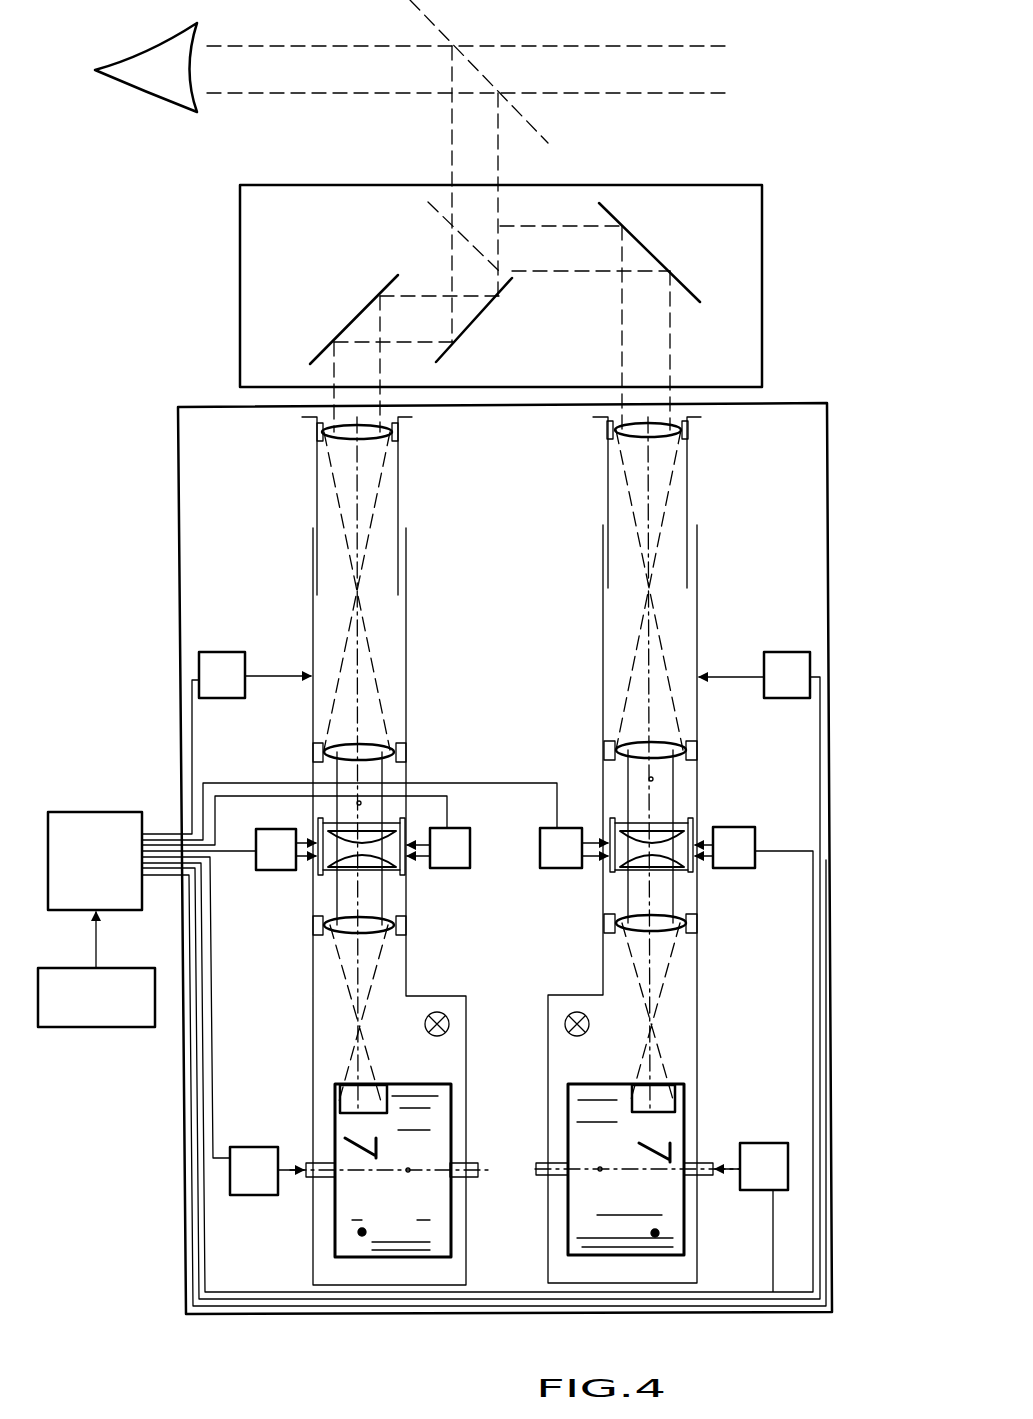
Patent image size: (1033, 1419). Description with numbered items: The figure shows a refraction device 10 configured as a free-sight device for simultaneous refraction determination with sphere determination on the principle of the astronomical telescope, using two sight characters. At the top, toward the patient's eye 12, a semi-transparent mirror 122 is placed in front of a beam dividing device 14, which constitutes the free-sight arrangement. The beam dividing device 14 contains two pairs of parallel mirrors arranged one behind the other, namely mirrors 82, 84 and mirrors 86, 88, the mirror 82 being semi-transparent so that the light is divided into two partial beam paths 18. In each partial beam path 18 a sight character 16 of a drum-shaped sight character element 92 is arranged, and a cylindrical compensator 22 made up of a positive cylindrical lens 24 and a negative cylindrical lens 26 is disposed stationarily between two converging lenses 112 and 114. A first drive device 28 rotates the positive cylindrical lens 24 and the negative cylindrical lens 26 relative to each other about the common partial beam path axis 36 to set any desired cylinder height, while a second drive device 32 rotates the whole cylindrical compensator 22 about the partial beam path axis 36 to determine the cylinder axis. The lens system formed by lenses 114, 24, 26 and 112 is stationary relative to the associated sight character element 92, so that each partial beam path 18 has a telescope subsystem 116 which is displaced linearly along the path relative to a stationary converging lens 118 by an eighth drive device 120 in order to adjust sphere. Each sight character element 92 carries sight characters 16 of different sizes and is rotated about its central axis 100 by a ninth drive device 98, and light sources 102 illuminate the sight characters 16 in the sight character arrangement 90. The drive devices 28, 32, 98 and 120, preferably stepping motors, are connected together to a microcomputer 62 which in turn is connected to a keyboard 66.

The refraction device 10 is at (210, 362).
The eye 12 is at (143, 92).
The beam dividing device 14 is at (240, 242).
The sight character 16 is at (349, 1160).
The partial beam path 18 is at (381, 373).
The cylindrical compensator 22 is at (333, 872).
The positive cylindrical lens 24 is at (349, 829).
The negative cylindrical lens 26 is at (377, 855).
The first drive device 28 is at (258, 870).
The second drive device 32 is at (472, 858).
The partial beam path axis 36 is at (362, 801).
The microcomputer 62 is at (90, 812).
The keyboard 66 is at (90, 1027).
The mirror 82 is at (450, 220).
The mirror 84 is at (648, 248).
The mirror 86 is at (483, 318).
The mirror 88 is at (352, 322).
The sight character arrangement 90 is at (179, 560).
The sight character element 92 is at (568, 1225).
The ninth drive device 98 is at (264, 1147).
The central axis 100 is at (408, 1175).
The light source 102 is at (565, 1024).
The converging lens 112 is at (348, 936).
The converging lens 114 is at (375, 745).
The telescope subsystem 116 is at (466, 1082).
The converging lens 118 is at (360, 438).
The eighth drive device 120 is at (238, 652).
The semi-transparent mirror 122 is at (518, 117).